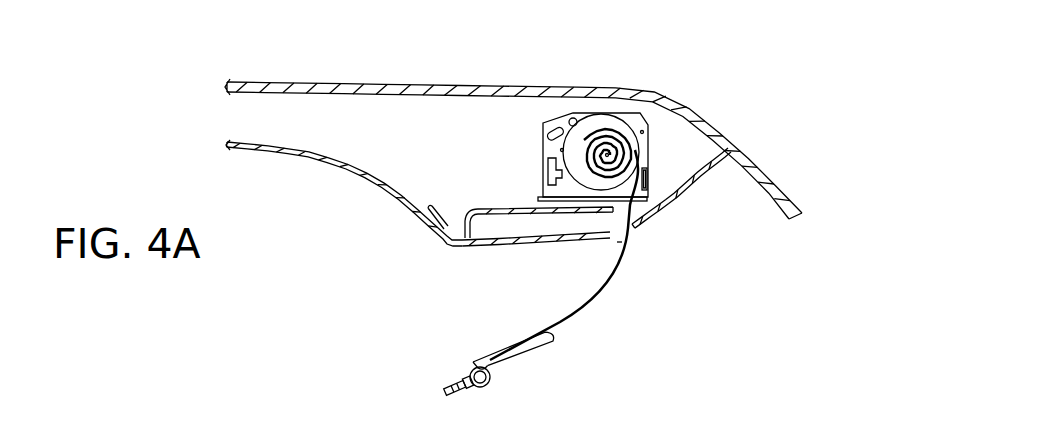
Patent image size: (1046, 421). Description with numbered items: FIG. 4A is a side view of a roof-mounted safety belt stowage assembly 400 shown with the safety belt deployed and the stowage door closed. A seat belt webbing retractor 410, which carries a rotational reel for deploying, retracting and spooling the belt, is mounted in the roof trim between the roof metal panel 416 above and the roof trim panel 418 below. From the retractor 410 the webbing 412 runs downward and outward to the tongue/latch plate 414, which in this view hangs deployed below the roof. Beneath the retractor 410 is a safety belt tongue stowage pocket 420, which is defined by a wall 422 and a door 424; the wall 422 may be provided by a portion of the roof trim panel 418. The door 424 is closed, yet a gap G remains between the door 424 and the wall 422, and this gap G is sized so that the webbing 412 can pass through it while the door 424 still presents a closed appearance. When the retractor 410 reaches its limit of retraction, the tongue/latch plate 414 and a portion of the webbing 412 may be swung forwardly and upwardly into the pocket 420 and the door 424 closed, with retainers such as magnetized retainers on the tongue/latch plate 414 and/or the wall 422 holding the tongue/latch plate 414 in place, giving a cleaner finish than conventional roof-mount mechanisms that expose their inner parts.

The roof-mounted assembly 400 is at (735, 74).
The retractor 410 is at (592, 112).
The webbing 412 is at (598, 303).
The tongue/latch plate 414 is at (486, 394).
The roof metal panel 416 is at (386, 83).
The roof trim panel 418 is at (312, 152).
The pocket 420 is at (556, 266).
The wall 422 is at (496, 208).
The door 424 is at (486, 249).
The gap G is at (640, 238).